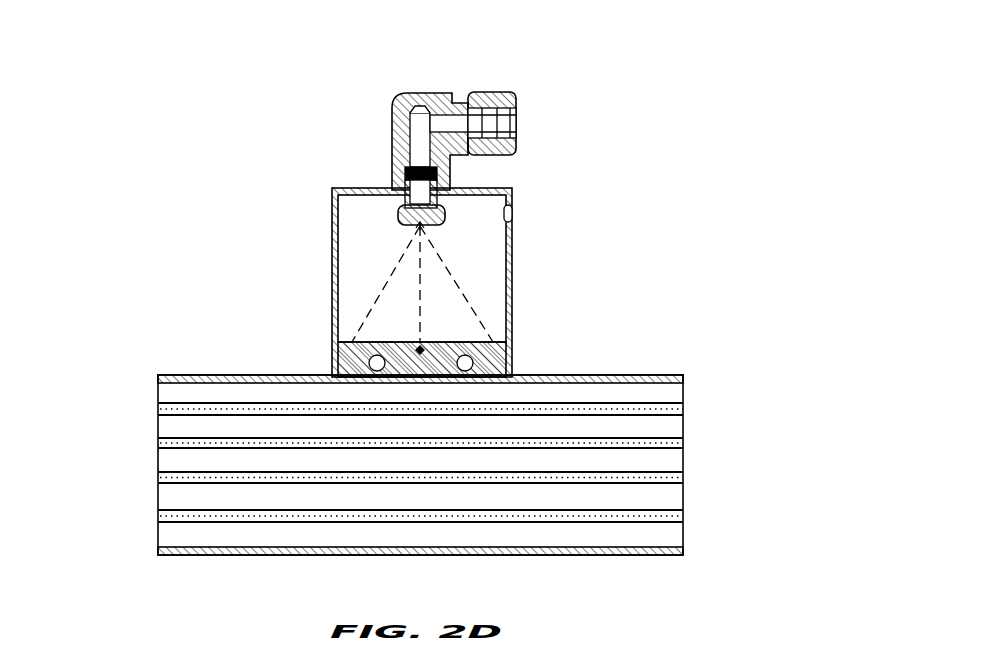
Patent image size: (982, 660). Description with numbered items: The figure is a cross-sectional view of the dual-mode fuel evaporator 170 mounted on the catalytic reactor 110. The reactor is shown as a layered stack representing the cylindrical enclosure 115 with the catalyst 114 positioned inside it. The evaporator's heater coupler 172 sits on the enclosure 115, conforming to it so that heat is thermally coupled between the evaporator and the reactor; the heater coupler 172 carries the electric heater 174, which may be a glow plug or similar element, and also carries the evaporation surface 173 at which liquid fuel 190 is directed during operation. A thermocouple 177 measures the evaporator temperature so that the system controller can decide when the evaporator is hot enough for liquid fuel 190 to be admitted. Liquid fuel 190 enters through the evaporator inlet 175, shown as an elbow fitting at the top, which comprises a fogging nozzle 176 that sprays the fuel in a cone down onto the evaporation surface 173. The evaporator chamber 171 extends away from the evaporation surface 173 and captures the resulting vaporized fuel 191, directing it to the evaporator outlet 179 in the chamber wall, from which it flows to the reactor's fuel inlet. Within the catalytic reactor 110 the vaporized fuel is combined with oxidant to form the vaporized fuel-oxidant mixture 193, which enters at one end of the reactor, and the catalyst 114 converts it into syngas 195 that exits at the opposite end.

The catalytic reactor 110 is at (688, 368).
The catalyst 114 is at (667, 503).
The enclosure 115 is at (683, 383).
The dual-mode fuel evaporator 170 is at (532, 76).
The evaporator chamber 171 is at (335, 265).
The heater coupler 172 is at (369, 362).
The evaporation surface 173 is at (405, 337).
The electric heater 174 is at (473, 358).
The evaporator inlet 175 is at (516, 98).
The fogging nozzle 176 is at (397, 208).
The thermocouple 177 is at (418, 347).
The evaporator outlet 179 is at (512, 213).
The liquid fuel 190 is at (518, 125).
The vaporized fuel 191 is at (517, 220).
The vaporized fuel-oxidant mixture 193 is at (152, 464).
The syngas 195 is at (683, 467).